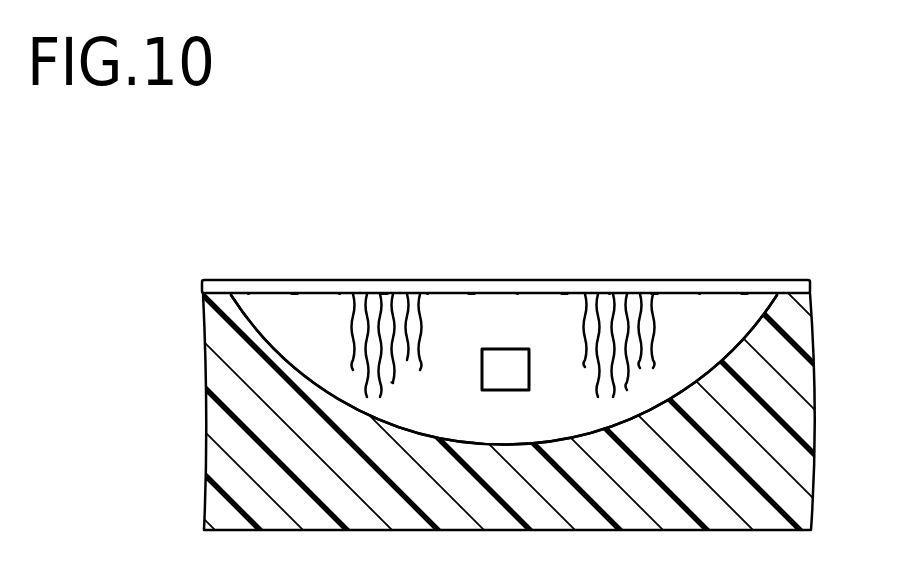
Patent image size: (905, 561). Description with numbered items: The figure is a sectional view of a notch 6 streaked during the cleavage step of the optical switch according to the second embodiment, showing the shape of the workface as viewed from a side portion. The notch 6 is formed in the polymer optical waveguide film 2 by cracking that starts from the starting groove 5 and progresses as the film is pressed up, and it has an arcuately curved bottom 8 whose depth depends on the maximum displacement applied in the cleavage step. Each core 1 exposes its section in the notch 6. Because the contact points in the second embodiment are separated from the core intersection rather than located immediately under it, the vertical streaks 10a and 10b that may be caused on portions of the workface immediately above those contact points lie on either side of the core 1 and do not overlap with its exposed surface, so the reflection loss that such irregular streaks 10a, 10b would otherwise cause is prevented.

The core 1 is at (494, 360).
The polymer optical waveguide film 2 is at (242, 455).
The starting groove 5 is at (733, 288).
The notch 6 is at (672, 322).
The bottom 8 is at (270, 340).
The streak 10a is at (353, 327).
The streak 10b is at (583, 328).